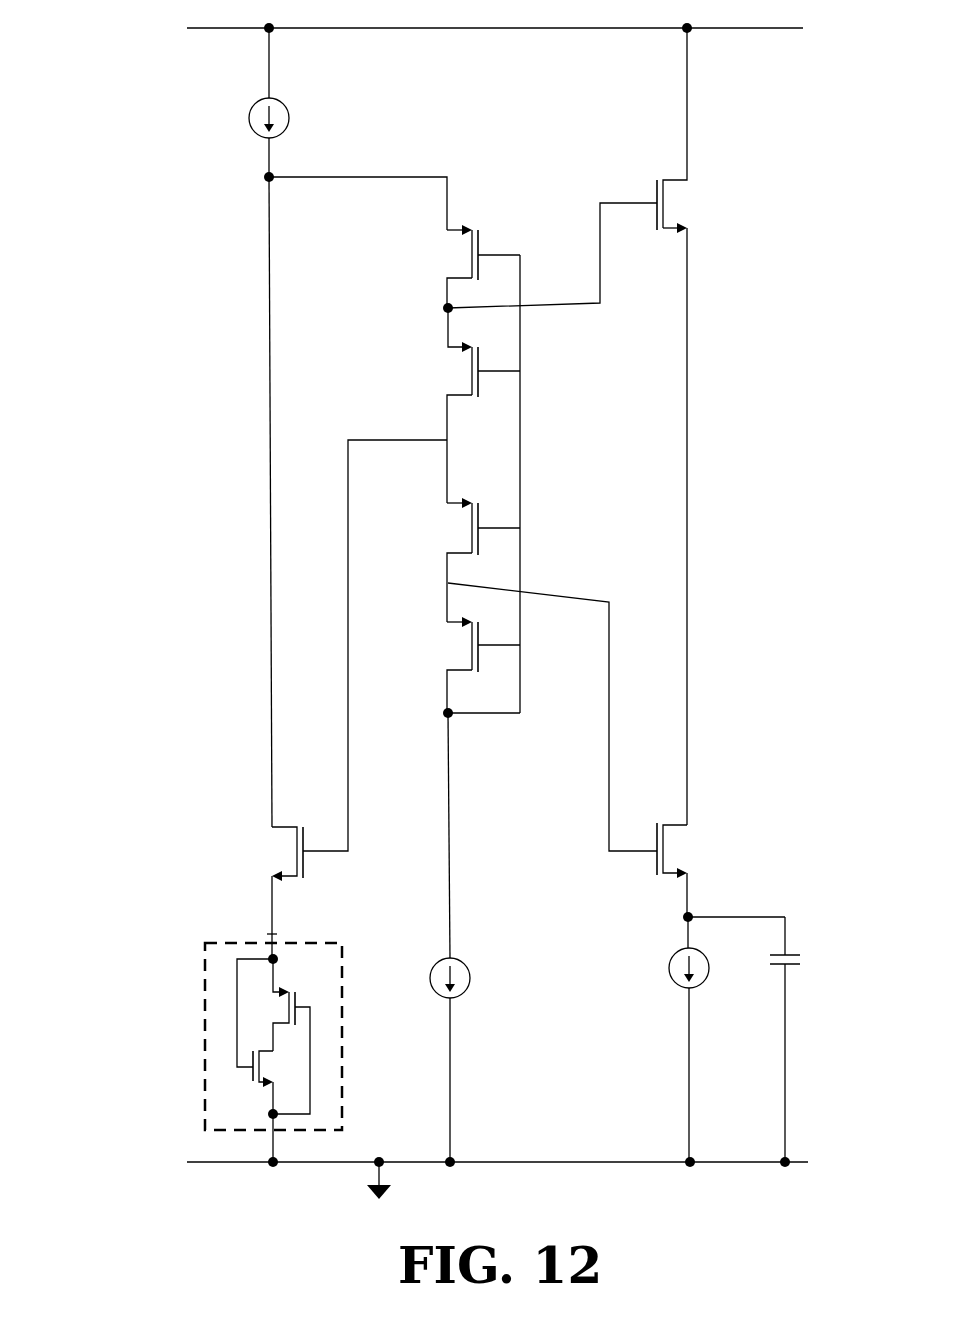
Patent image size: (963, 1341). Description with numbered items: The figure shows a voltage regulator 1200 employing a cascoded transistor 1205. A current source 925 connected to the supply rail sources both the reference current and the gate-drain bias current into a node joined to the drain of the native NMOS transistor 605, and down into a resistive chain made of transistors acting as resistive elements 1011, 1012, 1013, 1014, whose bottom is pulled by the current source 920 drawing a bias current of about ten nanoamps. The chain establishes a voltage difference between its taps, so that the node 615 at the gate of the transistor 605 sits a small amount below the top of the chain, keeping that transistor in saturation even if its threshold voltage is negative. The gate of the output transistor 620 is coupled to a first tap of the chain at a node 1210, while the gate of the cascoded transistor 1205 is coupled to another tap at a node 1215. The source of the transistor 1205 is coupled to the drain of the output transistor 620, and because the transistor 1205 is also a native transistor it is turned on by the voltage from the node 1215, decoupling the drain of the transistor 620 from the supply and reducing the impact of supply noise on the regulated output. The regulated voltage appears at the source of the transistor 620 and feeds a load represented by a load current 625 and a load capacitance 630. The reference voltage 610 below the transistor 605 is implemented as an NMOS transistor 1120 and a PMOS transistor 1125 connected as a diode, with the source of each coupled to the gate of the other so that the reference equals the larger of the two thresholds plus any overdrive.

The voltage regulator circuit 1200 is at (104, 1008).
The current source 925 is at (307, 102).
The resistive element 1011 is at (490, 266).
The resistive element 1012 is at (483, 405).
The resistive element 1013 is at (483, 550).
The resistive element 1014 is at (483, 661).
The node 1215 is at (527, 263).
The node 1210 is at (527, 717).
The node 615 is at (402, 638).
The cascoded transistor 1205 is at (659, 426).
The output transistor 620 is at (652, 870).
The native transistor 605 is at (315, 893).
The voltage reference 610 is at (294, 1052).
The PMOS transistor 1125 is at (277, 1036).
The NMOS transistor 1120 is at (282, 1106).
The current source 920 is at (479, 937).
The load current 625 is at (666, 1039).
The voltage source 630 is at (810, 1039).